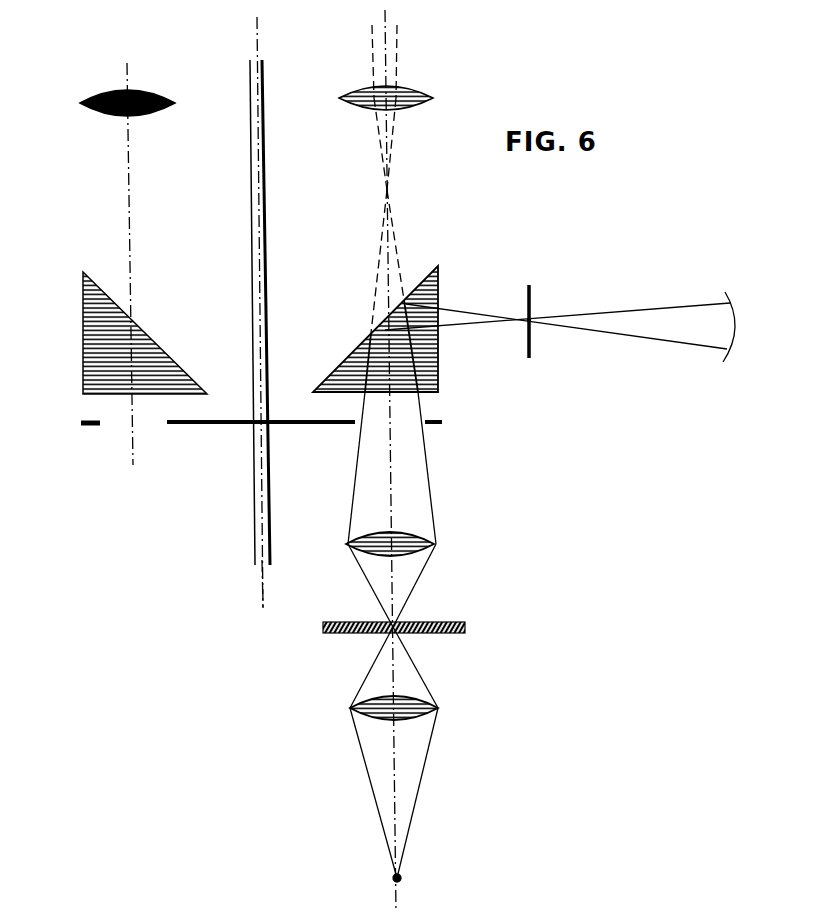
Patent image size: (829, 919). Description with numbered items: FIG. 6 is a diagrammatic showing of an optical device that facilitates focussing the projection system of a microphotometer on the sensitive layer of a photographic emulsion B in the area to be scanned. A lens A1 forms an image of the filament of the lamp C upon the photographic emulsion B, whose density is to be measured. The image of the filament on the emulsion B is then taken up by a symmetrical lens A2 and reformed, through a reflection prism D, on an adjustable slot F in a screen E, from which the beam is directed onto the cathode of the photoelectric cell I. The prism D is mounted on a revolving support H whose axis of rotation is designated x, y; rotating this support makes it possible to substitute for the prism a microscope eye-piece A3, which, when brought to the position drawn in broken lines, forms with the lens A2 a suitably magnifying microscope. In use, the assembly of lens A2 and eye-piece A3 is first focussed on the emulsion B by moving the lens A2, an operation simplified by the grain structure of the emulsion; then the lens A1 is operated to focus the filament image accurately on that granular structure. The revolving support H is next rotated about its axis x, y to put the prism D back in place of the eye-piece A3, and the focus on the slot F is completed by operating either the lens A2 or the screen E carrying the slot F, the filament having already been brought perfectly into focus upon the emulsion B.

The microscope eye-piece A3 is at (478, 54).
The symmetrical lens A2 is at (412, 540).
The lens A1 is at (437, 712).
The photographic emulsion B is at (462, 622).
The lamp C is at (404, 879).
The reflection prism D is at (148, 333).
The screen E is at (532, 353).
The adjustable slot F is at (535, 316).
The revolving support H is at (228, 425).
The photoelectric cell I is at (733, 330).
The axis of rotation x is at (252, 310).
The axis of rotation y is at (255, 592).